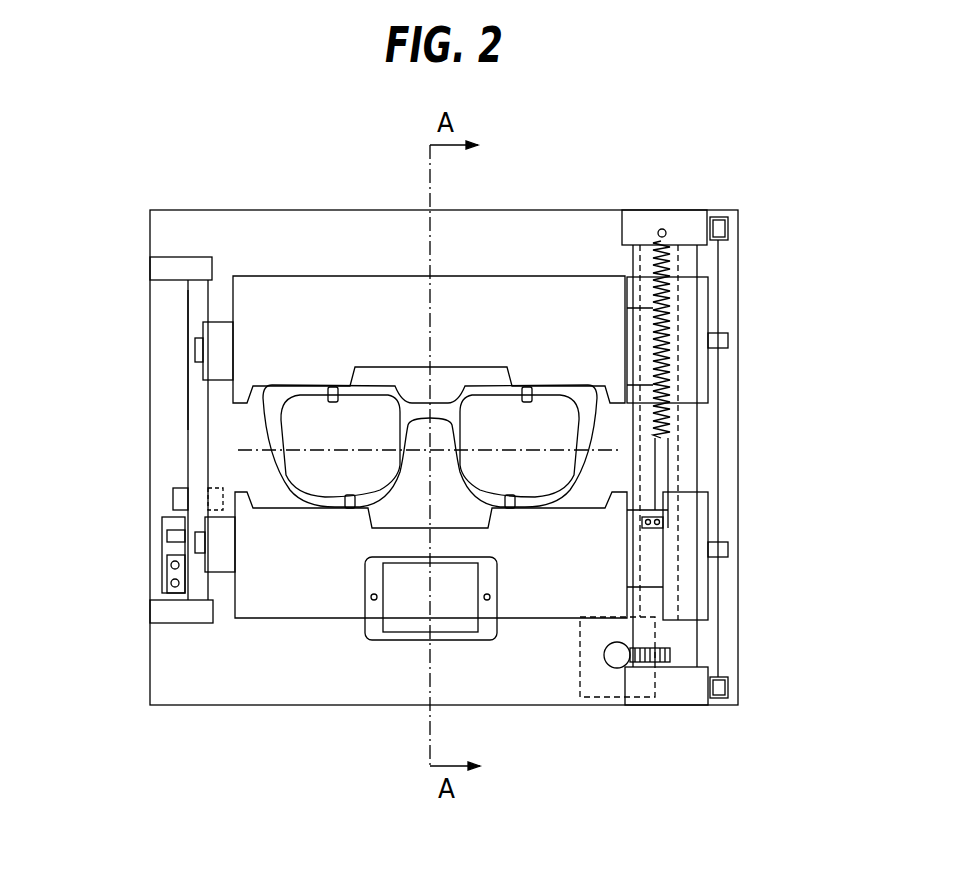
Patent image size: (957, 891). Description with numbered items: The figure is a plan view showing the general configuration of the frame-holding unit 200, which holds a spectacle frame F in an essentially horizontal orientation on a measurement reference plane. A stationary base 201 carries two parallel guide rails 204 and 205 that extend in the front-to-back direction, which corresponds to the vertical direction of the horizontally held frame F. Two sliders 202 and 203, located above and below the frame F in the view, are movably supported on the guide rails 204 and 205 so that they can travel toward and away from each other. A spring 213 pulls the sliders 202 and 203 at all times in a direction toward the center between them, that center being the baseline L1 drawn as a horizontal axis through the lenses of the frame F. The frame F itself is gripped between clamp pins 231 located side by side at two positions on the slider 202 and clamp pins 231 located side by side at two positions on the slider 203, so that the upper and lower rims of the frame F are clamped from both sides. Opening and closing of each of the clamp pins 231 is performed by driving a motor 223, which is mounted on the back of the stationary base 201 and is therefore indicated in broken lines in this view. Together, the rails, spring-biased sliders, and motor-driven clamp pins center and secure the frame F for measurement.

The frame-holding unit 200 is at (771, 296).
The stationary base 201 is at (218, 236).
The slider 202 is at (242, 612).
The slider 203 is at (279, 322).
The guide rail 204 is at (690, 452).
The guide rail 205 is at (200, 440).
The spring 213 is at (655, 390).
The motor 223 is at (592, 692).
The clamp pins 231 is at (512, 508).
The frame F is at (488, 390).
The baseline L1 is at (250, 447).